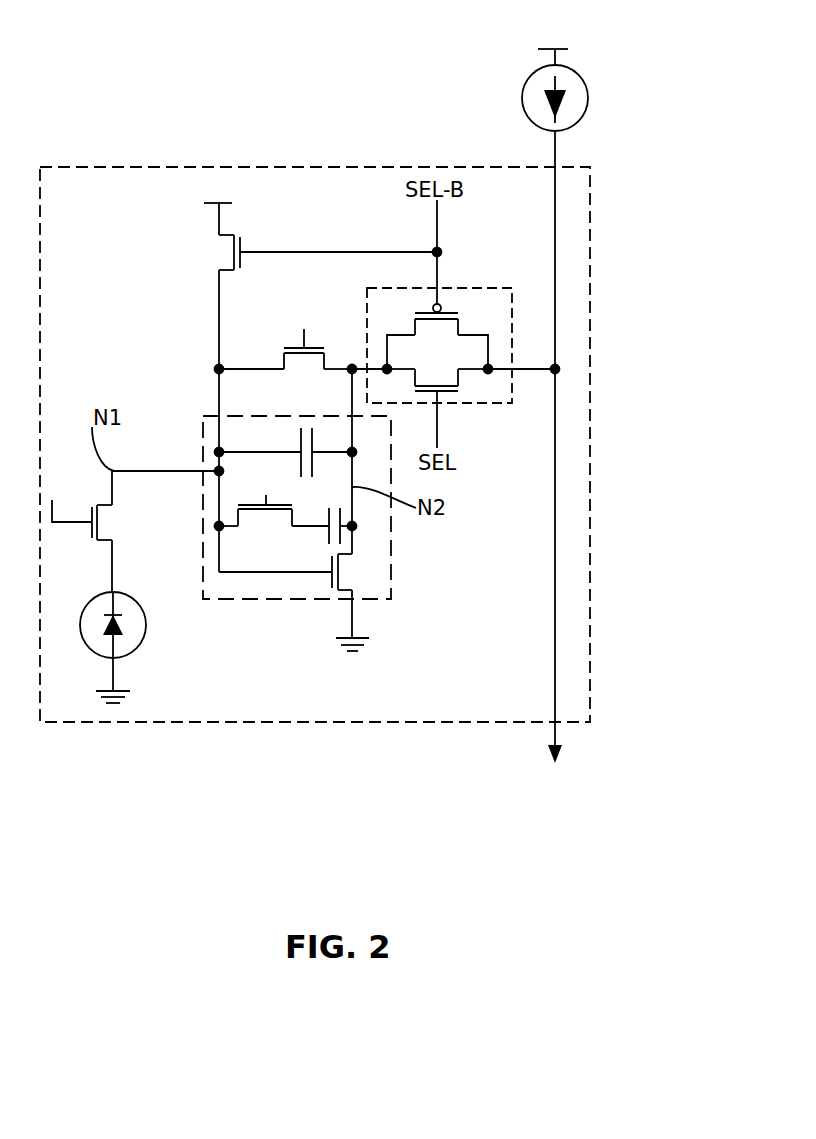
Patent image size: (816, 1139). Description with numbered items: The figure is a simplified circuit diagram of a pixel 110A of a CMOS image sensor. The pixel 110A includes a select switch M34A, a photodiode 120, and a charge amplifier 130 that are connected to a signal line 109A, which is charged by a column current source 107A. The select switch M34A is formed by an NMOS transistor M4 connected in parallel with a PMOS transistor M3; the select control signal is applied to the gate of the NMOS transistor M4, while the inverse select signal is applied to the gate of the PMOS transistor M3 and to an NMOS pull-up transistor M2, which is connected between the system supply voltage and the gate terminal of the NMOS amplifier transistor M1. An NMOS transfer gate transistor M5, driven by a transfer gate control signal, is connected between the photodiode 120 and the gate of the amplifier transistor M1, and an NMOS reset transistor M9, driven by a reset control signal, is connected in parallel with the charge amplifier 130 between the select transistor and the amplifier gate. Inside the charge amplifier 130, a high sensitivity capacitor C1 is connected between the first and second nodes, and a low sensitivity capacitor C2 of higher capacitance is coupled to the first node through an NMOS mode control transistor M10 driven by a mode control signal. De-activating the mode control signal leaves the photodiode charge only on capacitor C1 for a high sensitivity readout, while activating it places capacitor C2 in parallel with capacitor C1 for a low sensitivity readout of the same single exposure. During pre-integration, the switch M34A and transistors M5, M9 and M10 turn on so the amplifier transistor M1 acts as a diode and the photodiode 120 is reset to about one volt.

The pixel 110A is at (140, 163).
The column current source 107A is at (588, 100).
The signal line 109A is at (556, 733).
The charge amplifier 130 is at (196, 421).
The photodiode 120 is at (143, 640).
The select switch M34A is at (456, 368).
The NMOS amplifier transistor M1 is at (301, 572).
The NMOS pull-up transistor M2 is at (316, 224).
The PMOS transistor M3 is at (437, 336).
The NMOS transistor M4 is at (484, 431).
The NMOS transfer gate transistor M5 is at (89, 505).
The NMOS reset transistor M9 is at (285, 344).
The NMOS mode control transistor M10 is at (274, 505).
The high sensitivity capacitor C1 is at (285, 450).
The low sensitivity capacitor C2 is at (324, 528).